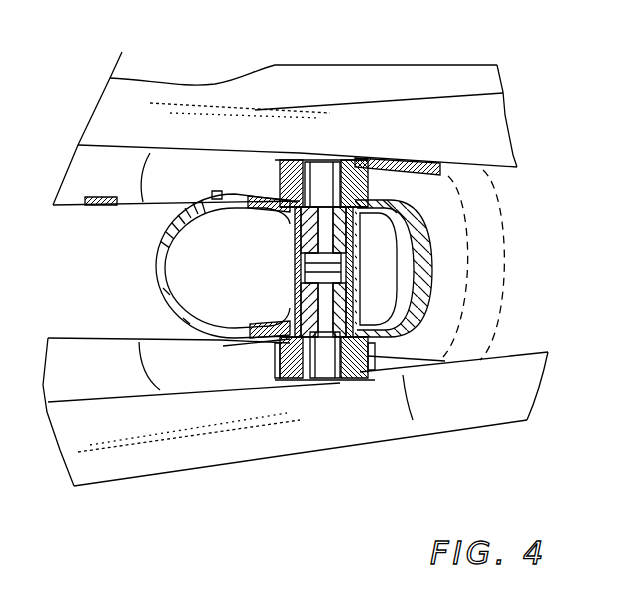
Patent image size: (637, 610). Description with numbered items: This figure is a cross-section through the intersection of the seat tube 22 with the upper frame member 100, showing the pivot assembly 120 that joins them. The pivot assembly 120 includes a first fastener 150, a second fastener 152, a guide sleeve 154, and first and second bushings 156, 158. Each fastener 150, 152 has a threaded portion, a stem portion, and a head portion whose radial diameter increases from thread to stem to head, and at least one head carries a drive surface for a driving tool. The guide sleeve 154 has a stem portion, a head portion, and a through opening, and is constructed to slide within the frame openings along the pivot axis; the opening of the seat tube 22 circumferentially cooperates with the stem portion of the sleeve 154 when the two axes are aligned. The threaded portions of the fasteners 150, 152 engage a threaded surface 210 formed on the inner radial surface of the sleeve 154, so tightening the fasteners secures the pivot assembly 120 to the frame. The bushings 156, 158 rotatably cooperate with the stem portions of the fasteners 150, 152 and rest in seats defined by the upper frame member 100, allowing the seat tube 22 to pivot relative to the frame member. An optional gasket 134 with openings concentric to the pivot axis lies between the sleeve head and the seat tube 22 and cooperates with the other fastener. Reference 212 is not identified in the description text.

The upper frame member 100 is at (86, 195).
The seat tube 22 is at (156, 275).
The pivot assembly 120 is at (418, 16).
The first fastener 150 is at (357, 156).
The second fastener 152 is at (343, 382).
The guide sleeve 154 is at (293, 267).
The first bushing 156 is at (280, 183).
The second bushing 158 is at (372, 356).
The gasket 134 is at (430, 259).
The threaded surface 210 is at (293, 258).
The flange 212 is at (413, 420).